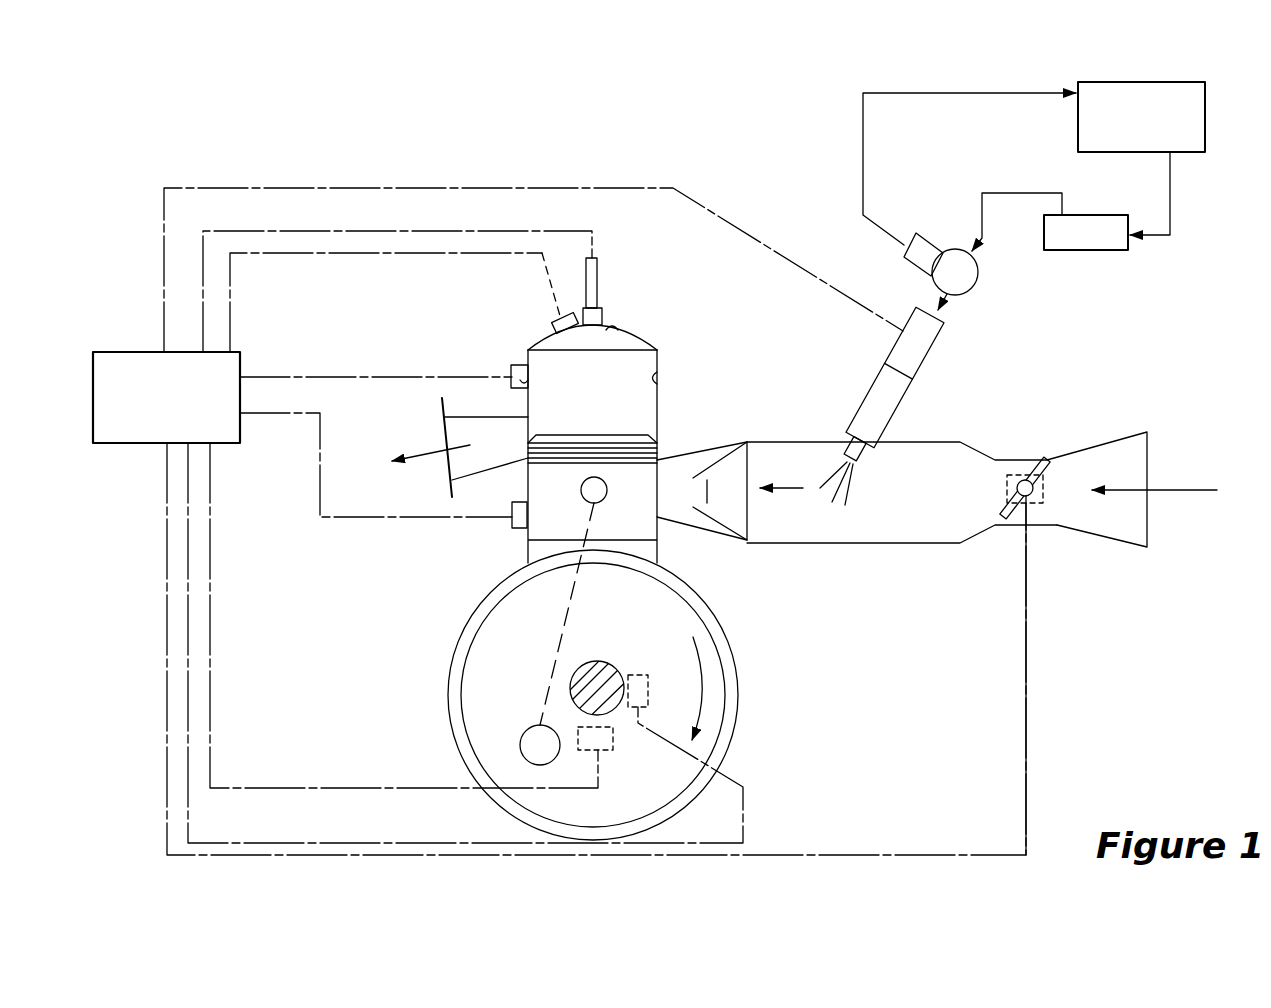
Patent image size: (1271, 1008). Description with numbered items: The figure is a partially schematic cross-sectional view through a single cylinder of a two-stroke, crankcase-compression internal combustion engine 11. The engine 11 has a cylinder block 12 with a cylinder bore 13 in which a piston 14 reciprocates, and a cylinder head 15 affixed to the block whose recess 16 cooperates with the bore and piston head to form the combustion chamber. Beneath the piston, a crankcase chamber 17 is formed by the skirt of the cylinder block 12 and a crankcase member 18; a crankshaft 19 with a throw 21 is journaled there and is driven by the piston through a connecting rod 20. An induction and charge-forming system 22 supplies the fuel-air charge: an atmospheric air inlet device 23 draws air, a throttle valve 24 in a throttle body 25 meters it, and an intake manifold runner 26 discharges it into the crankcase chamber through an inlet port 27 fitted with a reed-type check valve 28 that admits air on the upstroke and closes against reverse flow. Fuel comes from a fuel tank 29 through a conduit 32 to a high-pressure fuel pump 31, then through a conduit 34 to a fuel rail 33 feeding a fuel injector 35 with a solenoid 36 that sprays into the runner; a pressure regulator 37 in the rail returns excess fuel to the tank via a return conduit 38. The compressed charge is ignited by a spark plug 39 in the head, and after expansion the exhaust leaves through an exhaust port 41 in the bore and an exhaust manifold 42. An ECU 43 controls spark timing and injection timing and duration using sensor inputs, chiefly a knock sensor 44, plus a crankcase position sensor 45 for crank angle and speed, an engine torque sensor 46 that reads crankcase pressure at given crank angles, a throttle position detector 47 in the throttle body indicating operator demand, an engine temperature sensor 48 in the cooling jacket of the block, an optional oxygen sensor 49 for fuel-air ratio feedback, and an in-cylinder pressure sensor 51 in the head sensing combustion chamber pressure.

The internal combustion engine 11 is at (744, 325).
The cylinder block 12 is at (660, 403).
The cylinder bore 13 is at (660, 372).
The piston 14 is at (606, 526).
The cylinder head 15 is at (665, 330).
The recess 16 is at (612, 328).
The crankcase chamber 17 is at (452, 655).
The crankcase member 18 is at (740, 712).
The crankshaft 19 is at (610, 665).
The connecting rod 20 is at (580, 620).
The throw 21 is at (530, 730).
The induction and charge-forming system 22 is at (995, 423).
The atmospheric air inlet device 23 is at (1125, 430).
The throttle valve 24 is at (1027, 458).
The throttle body 25 is at (1043, 540).
The intake manifold runner 26 is at (855, 545).
The inlet port 27 is at (688, 540).
The reed-type check valve 28 is at (745, 445).
The fuel tank 29 is at (1112, 82).
The high-pressure fuel pump 31 is at (1092, 250).
The conduit 32 is at (1178, 210).
The fuel rail 33 is at (980, 280).
The conduit 34 is at (995, 193).
The fuel injector 35 is at (943, 348).
The solenoid 36 is at (908, 370).
The pressure regulator 37 is at (928, 233).
The return conduit 38 is at (863, 127).
The spark plug 39 is at (598, 272).
The exhaust port 41 is at (506, 452).
The exhaust manifold 42 is at (442, 405).
The ECU 43 is at (118, 352).
The knock sensor 44 is at (511, 370).
The crankcase position sensor 45 is at (604, 750).
The engine torque sensor 46 is at (648, 688).
The throttle position detector 47 is at (1043, 495).
The engine temperature sensor 48 is at (515, 528).
The oxygen sensor 49 is at (520, 380).
The in-cylinder pressure sensor 51 is at (552, 322).